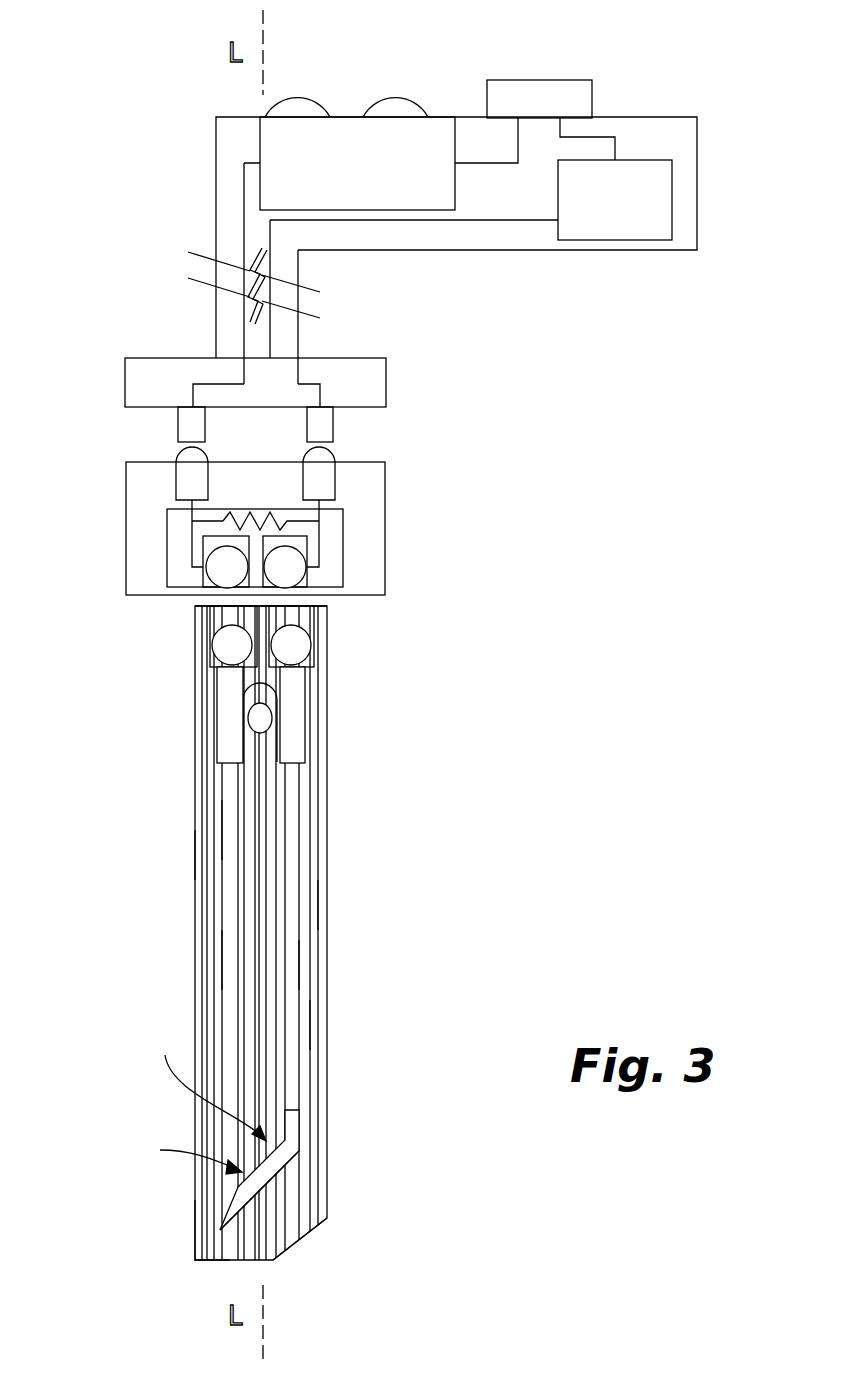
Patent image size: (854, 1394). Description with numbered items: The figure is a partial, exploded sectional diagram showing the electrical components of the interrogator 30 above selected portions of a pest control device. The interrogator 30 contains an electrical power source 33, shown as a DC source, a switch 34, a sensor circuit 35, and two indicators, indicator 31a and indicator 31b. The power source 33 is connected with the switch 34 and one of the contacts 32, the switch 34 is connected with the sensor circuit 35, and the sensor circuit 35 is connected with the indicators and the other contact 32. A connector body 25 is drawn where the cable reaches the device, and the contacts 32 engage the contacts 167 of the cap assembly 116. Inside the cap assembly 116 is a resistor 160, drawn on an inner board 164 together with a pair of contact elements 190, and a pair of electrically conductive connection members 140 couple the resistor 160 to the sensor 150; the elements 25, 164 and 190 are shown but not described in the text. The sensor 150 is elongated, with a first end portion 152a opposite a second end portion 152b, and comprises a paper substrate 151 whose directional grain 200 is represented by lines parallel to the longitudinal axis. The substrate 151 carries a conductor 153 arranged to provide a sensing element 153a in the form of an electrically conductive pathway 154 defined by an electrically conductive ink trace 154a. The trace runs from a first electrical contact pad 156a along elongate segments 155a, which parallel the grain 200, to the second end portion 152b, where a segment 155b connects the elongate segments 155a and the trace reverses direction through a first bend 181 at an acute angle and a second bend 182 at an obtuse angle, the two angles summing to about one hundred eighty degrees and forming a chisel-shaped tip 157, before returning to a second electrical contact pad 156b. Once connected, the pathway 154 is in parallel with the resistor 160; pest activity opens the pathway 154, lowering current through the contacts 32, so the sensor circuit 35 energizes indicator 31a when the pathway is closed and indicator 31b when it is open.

The connector block 25 is at (386, 365).
The interrogator 30 is at (688, 118).
The indicator 31a is at (298, 98).
The indicator 31b is at (396, 98).
The contacts 32 is at (333, 425).
The electrical power source 33 is at (672, 185).
The switch 34 is at (542, 80).
The sensor circuit 35 is at (400, 210).
The cap assembly 116 is at (385, 475).
The electrically conductive connection members 140 is at (303, 612).
The sensor 150 is at (330, 828).
The substrate 151 is at (315, 903).
The first end portion 152a is at (217, 683).
The second end portion 152b is at (195, 1228).
The conductor 153 is at (293, 730).
The sensing element 153a is at (298, 1135).
The electrically conductive pathway 154 is at (220, 958).
The electrically conductive ink trace 154a is at (220, 830).
The elongate segments 155a is at (195, 857).
The segment 155b is at (268, 1180).
The first electrical contact pad 156a is at (212, 630).
The second electrical contact pad 156b is at (312, 650).
The chisel-shaped tip 157 is at (248, 1205).
The resistor 160 is at (287, 527).
The circuit board 164 is at (343, 573).
The contacts 167 is at (178, 482).
The first bend 181 is at (183, 1150).
The second bend 182 is at (207, 1084).
The spring contacts 190 is at (203, 550).
The grain 200 is at (313, 1028).